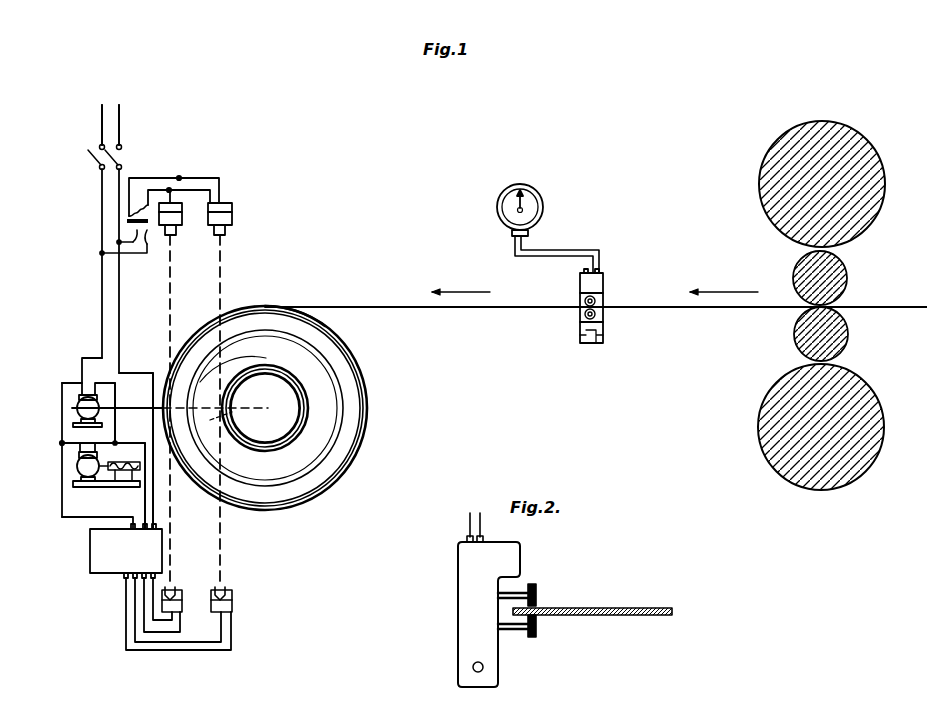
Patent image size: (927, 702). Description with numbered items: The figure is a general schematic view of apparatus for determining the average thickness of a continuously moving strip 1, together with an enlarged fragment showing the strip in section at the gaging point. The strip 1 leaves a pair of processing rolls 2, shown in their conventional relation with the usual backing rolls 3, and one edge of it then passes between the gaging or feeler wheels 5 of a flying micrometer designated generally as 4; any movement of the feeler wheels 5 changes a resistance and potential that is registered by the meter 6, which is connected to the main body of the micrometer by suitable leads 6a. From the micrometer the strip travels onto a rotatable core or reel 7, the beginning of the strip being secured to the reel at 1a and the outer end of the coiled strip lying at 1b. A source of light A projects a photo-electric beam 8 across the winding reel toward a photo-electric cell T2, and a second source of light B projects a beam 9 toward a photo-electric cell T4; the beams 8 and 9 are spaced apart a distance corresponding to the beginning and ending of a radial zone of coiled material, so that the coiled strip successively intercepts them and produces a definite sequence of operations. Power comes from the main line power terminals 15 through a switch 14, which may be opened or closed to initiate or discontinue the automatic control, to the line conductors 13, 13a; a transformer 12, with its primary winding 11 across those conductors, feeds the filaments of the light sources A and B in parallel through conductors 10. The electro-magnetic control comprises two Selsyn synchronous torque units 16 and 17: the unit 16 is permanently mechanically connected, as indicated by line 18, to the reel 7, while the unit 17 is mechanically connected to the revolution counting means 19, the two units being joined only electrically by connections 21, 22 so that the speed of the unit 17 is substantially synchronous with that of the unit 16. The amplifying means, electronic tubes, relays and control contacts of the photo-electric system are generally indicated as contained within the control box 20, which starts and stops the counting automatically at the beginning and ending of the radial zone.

In FIG. 1, the strip 1 is at (452, 308).
In FIG. 2, the strip 1 is at (604, 608).
In FIG. 1, the beginning of the strip 1a is at (233, 408).
In FIG. 1, the end of the coiled strip 1b is at (276, 304).
In FIG. 1, the rolls 2 is at (848, 310).
In FIG. 1, the backing rolls 3 is at (864, 170).
In FIG. 1, the flying micrometer 4 is at (604, 290).
In FIG. 2, the flying micrometer 4 is at (456, 563).
In FIG. 1, the gaging or feeler wheels 5 is at (584, 300).
In FIG. 2, the gaging or feeler wheels 5 is at (538, 622).
In FIG. 1, the meter 6 is at (496, 208).
In FIG. 1, the gauge connecting line 6a is at (568, 250).
In FIG. 2, the gauge connecting line 6a is at (486, 524).
In FIG. 1, the reel 7 is at (293, 417).
In FIG. 1, the photo-electric beam 8 is at (210, 418).
In FIG. 1, the photo-electric beam 9 is at (166, 408).
In FIG. 1, the conductors 10 is at (148, 186).
In FIG. 1, the relay coil 11 is at (130, 209).
In FIG. 1, the transformer 12 is at (142, 252).
In FIG. 1, the line conductor 13 is at (100, 239).
In FIG. 1, the line conductor 13a is at (126, 221).
In FIG. 1, the switch 14 is at (92, 162).
In FIG. 1, the main line power terminals 15 is at (100, 119).
In FIG. 1, the Selsyn unit 16 is at (62, 406).
In FIG. 1, the Selsyn unit 17 is at (77, 466).
In FIG. 1, the line 18 is at (236, 417).
In FIG. 1, the revolution counting means 19 is at (116, 486).
In FIG. 1, the control box 20 is at (90, 553).
In FIG. 1, the connection 21 is at (115, 402).
In FIG. 1, the connection 22 is at (60, 442).
In FIG. 1, the source of light A is at (232, 212).
In FIG. 1, the second source of light B is at (182, 212).
In FIG. 1, the photo-electric cell T2 is at (238, 598).
In FIG. 1, the photo-electric cell T4 is at (182, 598).